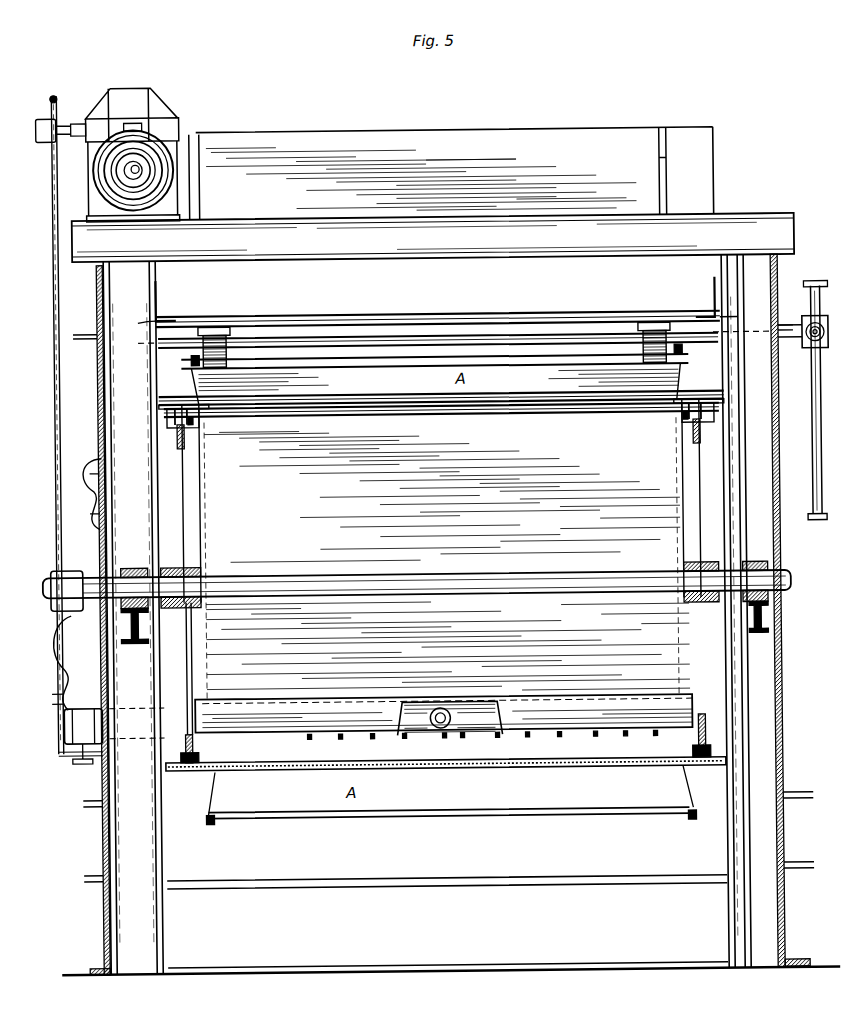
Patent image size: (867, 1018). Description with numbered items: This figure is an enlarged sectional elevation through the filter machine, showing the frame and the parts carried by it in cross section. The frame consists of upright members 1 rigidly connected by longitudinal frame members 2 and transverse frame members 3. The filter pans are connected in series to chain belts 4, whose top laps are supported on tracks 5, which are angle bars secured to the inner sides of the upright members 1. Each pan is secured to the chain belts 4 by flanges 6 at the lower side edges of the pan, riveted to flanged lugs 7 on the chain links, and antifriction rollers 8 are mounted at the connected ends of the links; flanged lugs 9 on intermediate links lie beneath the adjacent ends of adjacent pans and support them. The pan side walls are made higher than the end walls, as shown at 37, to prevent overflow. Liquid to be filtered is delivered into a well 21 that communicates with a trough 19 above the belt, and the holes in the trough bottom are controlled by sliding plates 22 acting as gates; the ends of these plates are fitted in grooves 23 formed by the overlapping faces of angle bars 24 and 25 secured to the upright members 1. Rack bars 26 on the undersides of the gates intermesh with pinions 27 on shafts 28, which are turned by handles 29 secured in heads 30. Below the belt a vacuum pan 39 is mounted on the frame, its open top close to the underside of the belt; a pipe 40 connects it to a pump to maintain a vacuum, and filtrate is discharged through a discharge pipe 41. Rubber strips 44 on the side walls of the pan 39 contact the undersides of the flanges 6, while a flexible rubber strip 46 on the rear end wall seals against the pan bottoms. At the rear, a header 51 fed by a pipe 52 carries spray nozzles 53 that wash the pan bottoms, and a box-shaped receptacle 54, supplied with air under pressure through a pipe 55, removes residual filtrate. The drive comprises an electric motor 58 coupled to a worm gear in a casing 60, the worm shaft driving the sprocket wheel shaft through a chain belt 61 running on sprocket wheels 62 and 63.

The upright frame member 1 is at (433, 614).
The longitudinal frame member 2 is at (99, 300).
The transverse frame member 3 is at (433, 237).
The chain belt 4 is at (202, 480).
The track 5 is at (196, 416).
The flange 6 is at (182, 404).
The flanged lug 7 is at (712, 760).
The antifriction roller 8 is at (200, 400).
The flanged lug 9 is at (168, 416).
The trough 19 is at (203, 186).
The well 21 is at (396, 128).
The plate 22 is at (332, 313).
The groove 23 is at (439, 313).
The angle bar 24 is at (158, 300).
The angle bar 25 is at (446, 340).
The rack bar 26 is at (240, 326).
The pinion 27 is at (250, 370).
The shaft 28 is at (430, 336).
The handle 29 is at (817, 524).
The head 30 is at (812, 370).
The side wall extension 37 is at (193, 354).
The vacuum pan 39 is at (447, 560).
The pipe 40 is at (94, 470).
The discharge pipe 41 is at (200, 622).
The rubber strip 44 is at (228, 418).
The rubber strip 46 is at (460, 415).
The header 51 is at (505, 716).
The pipe 52 is at (162, 728).
The spray nozzle 53 is at (272, 738).
The box-shaped receptacle 54 is at (412, 700).
The pipe 55 is at (190, 660).
The electric motor 58 is at (138, 176).
The casing 60 is at (135, 86).
The chain belt 61 is at (62, 200).
The sprocket wheel 62 is at (63, 96).
The sprocket wheel 63 is at (68, 614).